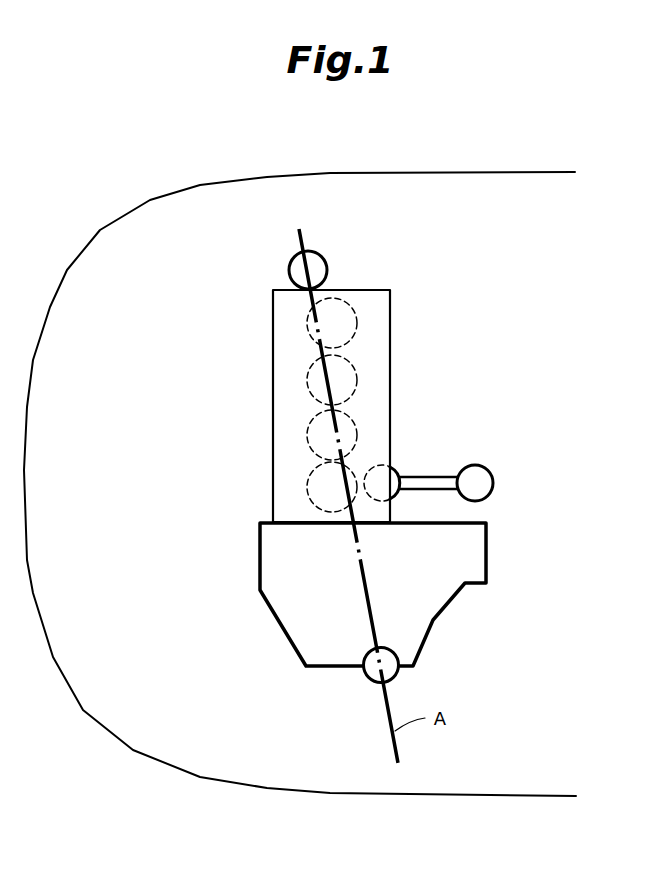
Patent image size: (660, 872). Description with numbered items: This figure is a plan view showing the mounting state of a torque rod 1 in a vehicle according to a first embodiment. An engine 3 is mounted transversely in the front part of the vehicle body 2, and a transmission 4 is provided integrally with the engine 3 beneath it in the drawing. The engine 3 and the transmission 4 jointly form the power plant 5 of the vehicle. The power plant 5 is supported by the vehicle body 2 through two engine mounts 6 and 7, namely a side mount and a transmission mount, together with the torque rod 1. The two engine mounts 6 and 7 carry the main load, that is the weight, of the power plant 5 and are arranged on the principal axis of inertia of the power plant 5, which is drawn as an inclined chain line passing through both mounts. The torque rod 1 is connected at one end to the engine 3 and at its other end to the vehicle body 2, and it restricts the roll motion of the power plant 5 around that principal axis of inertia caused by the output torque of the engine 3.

The torque rod 1 is at (430, 475).
The vehicle body 2 is at (432, 172).
The engine 3 is at (272, 450).
The transmission 4 is at (260, 556).
The power plant 5 is at (222, 368).
The engine mount 6 is at (328, 270).
The engine mount 7 is at (368, 680).